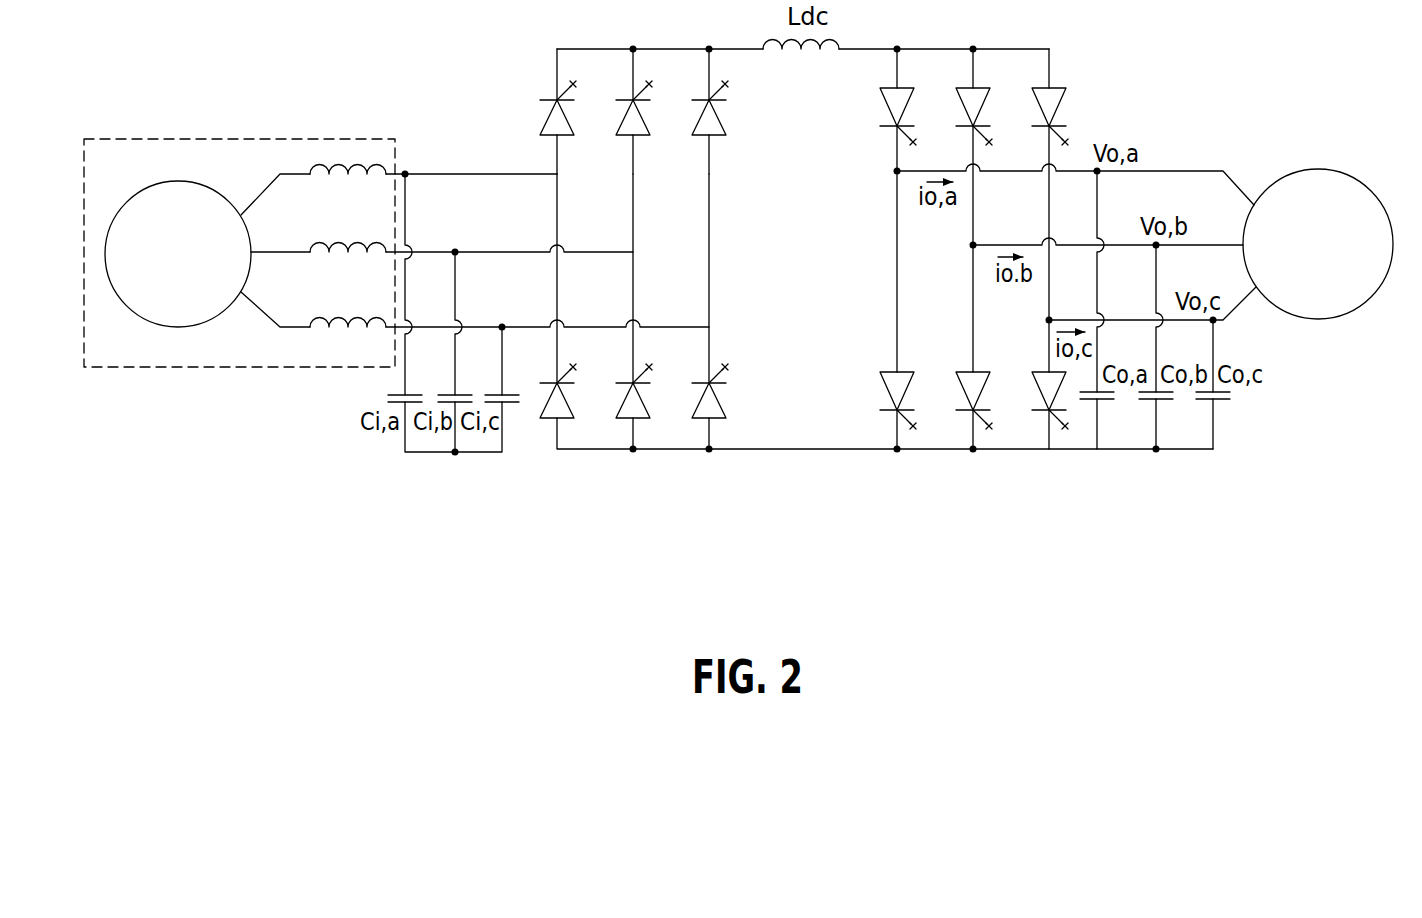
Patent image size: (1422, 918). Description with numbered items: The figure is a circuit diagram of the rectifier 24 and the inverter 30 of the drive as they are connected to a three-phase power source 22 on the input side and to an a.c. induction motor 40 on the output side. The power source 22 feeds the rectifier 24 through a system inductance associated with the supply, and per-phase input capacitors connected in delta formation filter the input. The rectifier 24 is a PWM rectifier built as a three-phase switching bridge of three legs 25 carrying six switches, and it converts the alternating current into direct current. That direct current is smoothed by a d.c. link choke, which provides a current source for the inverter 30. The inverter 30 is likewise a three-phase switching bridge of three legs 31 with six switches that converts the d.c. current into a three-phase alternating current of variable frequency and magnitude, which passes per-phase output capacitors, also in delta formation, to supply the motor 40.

The three-phase power source 22 is at (239, 217).
The rectifier 24 is at (524, 76).
The legs 25 is at (666, 278).
The current source inverter 30 is at (1096, 72).
The legs 31 is at (1049, 318).
The a.c. induction motor 40 is at (1328, 211).